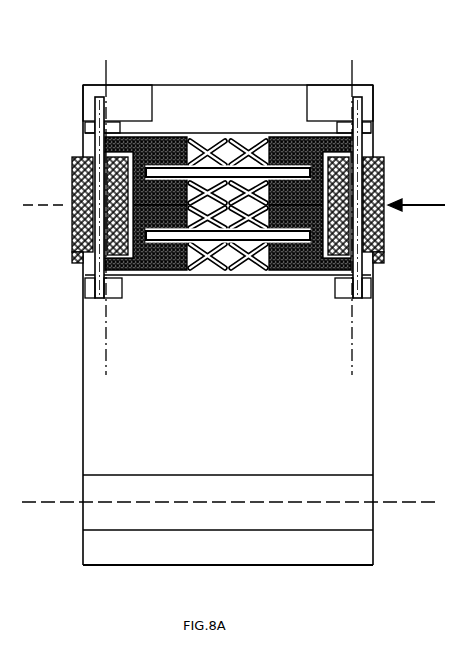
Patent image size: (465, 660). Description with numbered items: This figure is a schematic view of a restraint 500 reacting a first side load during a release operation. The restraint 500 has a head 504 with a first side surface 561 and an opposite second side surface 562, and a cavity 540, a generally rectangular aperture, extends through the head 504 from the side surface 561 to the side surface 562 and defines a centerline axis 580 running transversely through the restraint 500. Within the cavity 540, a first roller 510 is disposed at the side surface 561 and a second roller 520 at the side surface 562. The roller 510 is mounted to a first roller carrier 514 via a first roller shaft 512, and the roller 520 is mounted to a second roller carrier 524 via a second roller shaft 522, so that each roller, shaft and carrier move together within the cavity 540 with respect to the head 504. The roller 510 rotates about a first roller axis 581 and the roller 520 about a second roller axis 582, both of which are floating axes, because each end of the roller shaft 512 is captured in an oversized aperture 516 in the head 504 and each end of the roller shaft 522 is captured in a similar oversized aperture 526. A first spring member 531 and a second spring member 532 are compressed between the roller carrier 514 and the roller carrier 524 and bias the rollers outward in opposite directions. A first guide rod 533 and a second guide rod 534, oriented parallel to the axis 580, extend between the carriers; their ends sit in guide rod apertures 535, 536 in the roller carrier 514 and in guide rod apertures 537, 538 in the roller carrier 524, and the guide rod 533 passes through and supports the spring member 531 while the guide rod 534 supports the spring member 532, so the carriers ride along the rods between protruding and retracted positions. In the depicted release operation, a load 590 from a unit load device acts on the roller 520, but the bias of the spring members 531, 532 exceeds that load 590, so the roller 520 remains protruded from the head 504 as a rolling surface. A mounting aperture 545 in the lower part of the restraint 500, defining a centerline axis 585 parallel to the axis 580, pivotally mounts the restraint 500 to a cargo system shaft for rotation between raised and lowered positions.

The restraint 500 is at (76, 56).
The head 504 is at (368, 333).
The first roller 510 is at (77, 246).
The first roller shaft 512 is at (90, 266).
The first roller carrier 514 is at (157, 137).
The aperture 516 is at (85, 127).
The second roller 520 is at (384, 222).
The second roller shaft 522 is at (384, 243).
The second roller carrier 524 is at (312, 125).
The aperture 526 is at (371, 128).
The first spring member 531 is at (220, 145).
The second spring member 532 is at (222, 262).
The first guide rod 533 is at (313, 147).
The second guide rod 534 is at (267, 240).
The guide rod aperture 535 is at (173, 138).
The guide rod aperture 536 is at (158, 243).
The guide rod aperture 537 is at (285, 172).
The guide rod aperture 538 is at (308, 243).
The cavity 540 is at (237, 133).
The mounting aperture 545 is at (172, 475).
The side surface 561 is at (83, 355).
The side surface 562 is at (375, 363).
The centerline axis 580 is at (34, 205).
The first roller axis 581 is at (95, 312).
The second roller axis 582 is at (372, 310).
The centerline axis 585 is at (35, 502).
The load 590 is at (436, 202).